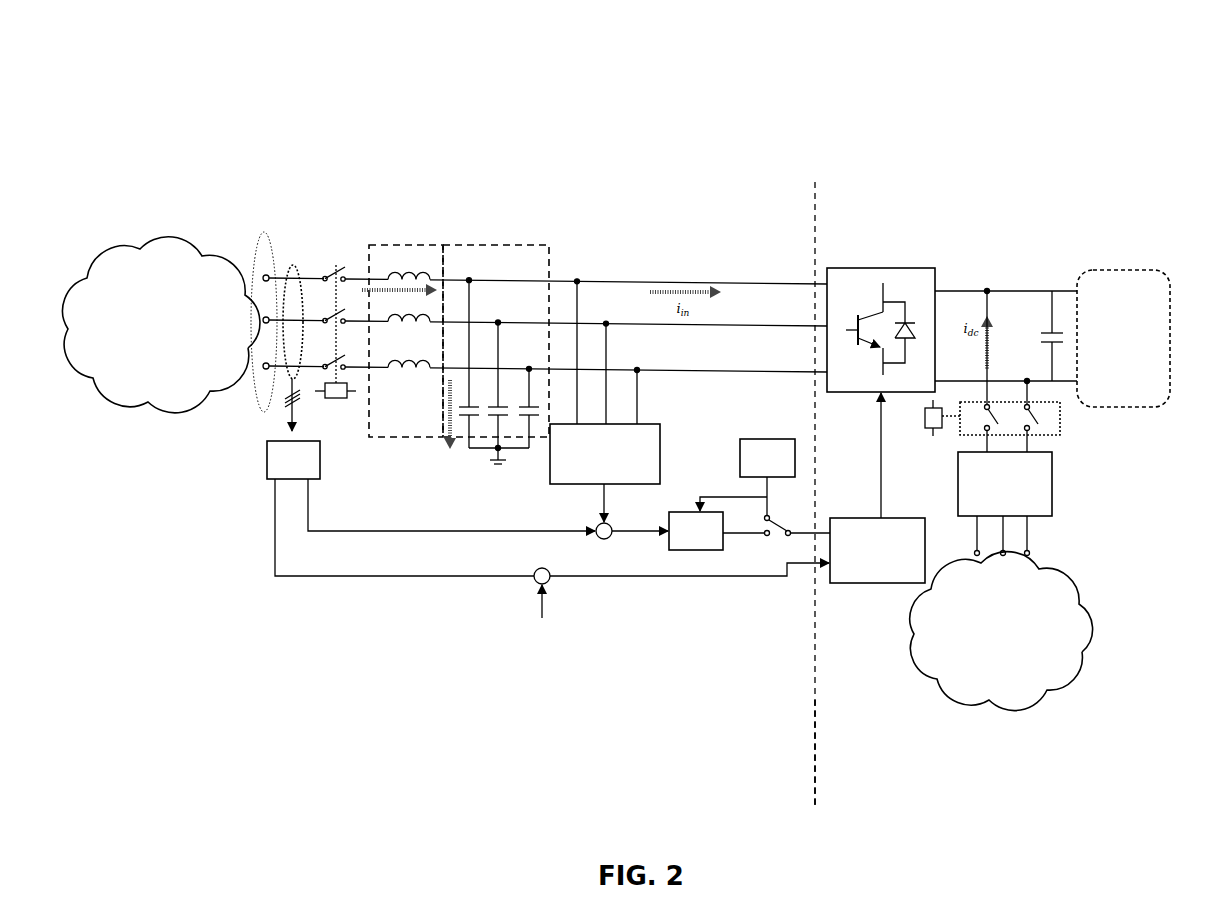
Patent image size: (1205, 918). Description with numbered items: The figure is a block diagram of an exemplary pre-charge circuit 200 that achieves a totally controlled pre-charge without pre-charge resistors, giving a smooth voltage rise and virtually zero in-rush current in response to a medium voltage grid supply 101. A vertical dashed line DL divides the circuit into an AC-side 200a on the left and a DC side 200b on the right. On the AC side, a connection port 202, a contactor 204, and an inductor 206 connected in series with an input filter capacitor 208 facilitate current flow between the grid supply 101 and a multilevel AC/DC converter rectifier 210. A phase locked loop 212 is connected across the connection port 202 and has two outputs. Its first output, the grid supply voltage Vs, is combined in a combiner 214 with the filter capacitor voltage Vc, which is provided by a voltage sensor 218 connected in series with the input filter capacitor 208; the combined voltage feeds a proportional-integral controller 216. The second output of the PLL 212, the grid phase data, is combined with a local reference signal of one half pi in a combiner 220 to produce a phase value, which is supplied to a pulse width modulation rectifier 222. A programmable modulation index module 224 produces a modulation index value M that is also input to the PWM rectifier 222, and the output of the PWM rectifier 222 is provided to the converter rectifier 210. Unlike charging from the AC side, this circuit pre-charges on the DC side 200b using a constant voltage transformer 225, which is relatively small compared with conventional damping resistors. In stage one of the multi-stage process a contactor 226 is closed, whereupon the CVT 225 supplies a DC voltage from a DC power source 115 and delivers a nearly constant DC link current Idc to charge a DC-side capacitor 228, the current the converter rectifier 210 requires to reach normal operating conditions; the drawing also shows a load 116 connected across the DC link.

The pre-charge circuit 200 is at (734, 419).
The AC-side 200a is at (788, 754).
The DC side 200b is at (841, 754).
The medium voltage grid supply 101 is at (161, 325).
The connection port 202 is at (272, 232).
The contactor 204 is at (345, 391).
The inductor 206 is at (402, 331).
The input filter capacitor 208 is at (490, 345).
The multilevel AC/DC converter rectifier 210 is at (940, 272).
The phase locked loop 212 is at (265, 455).
The combiner 214 is at (604, 540).
The proportional-integral controller 216 is at (697, 552).
The voltage sensor 218 is at (550, 488).
The combiner 220 is at (536, 587).
The pulse width modulation rectifier 222 is at (868, 590).
The programmable modulation index module 224 is at (762, 440).
The constant voltage transformer 225 is at (1055, 493).
The contactor 226 is at (1060, 435).
The DC-side capacitor 228 is at (1057, 320).
The load 116 is at (1123, 338).
The DC power source 115 is at (1001, 631).